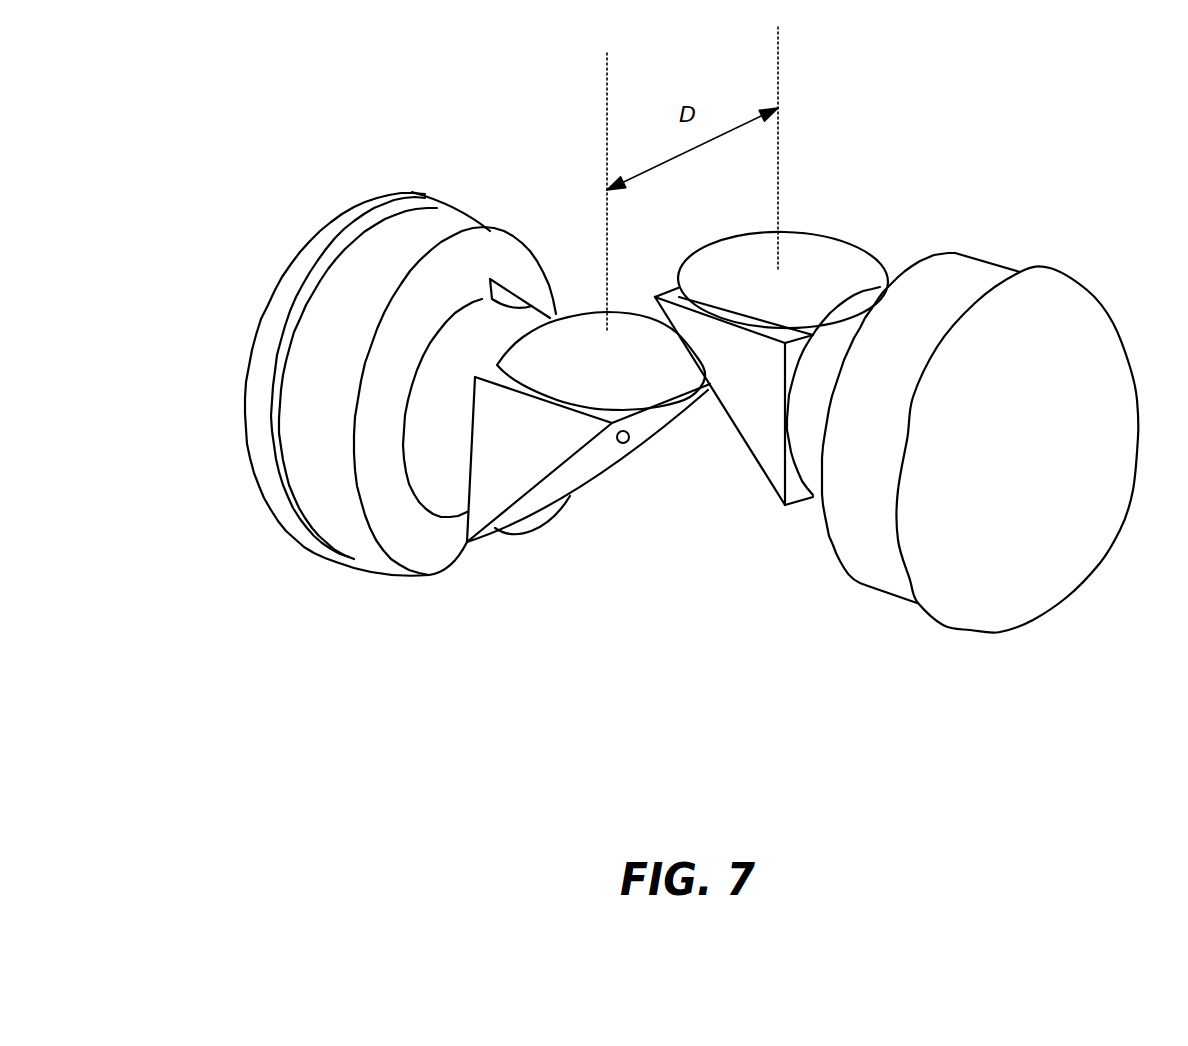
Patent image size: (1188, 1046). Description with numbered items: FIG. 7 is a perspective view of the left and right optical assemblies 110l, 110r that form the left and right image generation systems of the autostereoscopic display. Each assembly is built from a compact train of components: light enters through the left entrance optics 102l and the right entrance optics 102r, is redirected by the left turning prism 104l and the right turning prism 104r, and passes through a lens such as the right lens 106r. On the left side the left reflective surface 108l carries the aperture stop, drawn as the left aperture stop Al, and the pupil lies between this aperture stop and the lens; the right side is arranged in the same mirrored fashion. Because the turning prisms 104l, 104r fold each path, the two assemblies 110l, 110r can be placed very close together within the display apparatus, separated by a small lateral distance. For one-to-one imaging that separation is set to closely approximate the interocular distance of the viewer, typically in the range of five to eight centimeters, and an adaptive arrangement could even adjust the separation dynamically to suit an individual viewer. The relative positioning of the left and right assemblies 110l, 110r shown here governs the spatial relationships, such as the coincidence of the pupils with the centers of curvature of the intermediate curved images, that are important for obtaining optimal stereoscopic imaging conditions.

The left entrance optics 102l is at (362, 542).
The right entrance optics 102r is at (915, 600).
The left turning prism 104l is at (619, 455).
The right turning prism 104r is at (777, 472).
The right lens 106r is at (835, 242).
The left reflective surface 108l is at (673, 403).
The left optical assembly 110l is at (350, 634).
The right optical assembly 110r is at (1068, 217).
The left aperture stop Al is at (628, 443).